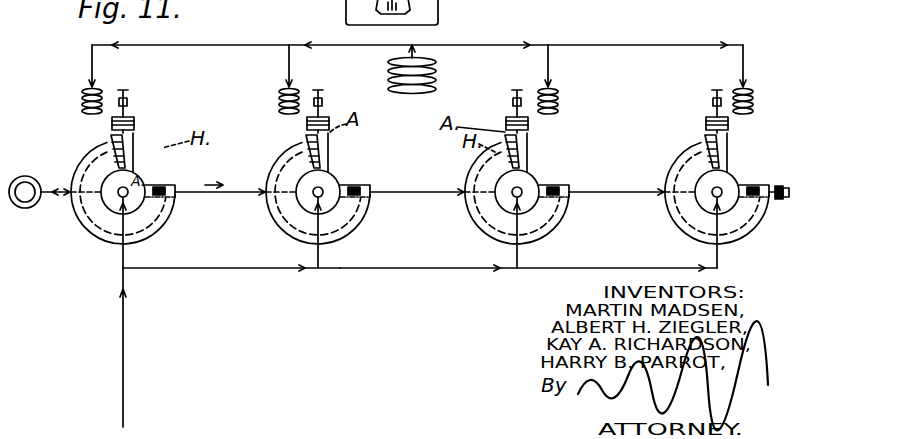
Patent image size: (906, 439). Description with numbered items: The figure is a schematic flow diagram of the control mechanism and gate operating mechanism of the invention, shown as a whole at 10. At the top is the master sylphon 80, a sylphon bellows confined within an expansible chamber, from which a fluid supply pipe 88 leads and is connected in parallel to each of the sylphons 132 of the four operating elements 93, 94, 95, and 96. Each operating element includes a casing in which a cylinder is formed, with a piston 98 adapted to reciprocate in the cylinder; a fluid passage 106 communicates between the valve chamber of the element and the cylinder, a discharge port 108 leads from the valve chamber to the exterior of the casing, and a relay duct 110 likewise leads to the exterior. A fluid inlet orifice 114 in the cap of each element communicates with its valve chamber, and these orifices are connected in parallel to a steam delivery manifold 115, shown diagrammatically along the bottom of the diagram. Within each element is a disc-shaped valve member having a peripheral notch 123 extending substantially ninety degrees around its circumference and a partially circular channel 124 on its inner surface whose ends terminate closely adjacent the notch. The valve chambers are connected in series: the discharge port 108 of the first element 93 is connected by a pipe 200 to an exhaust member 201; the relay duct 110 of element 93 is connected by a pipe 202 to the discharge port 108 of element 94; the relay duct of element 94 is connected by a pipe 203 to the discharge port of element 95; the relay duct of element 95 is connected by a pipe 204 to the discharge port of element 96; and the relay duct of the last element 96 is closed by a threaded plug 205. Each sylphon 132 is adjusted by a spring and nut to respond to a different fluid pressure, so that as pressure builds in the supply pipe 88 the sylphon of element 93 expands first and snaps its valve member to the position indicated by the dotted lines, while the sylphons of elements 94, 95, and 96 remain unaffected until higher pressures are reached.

The apparatus 10 is at (432, 227).
The master sylphon 80 is at (438, 81).
The supply pipe 88 is at (236, 48).
The gate operating element 93 is at (99, 277).
The operating element 94 is at (346, 274).
The operating element 95 is at (495, 280).
The operating element 96 is at (769, 230).
The piston 98 is at (131, 118).
The fluid passage 106 is at (131, 146).
The discharge port 108 is at (77, 212).
The relay duct 110 is at (160, 185).
The fluid inlet orifice 114 is at (120, 195).
The steam delivery manifold 115 is at (229, 270).
The peripheral notch 123 is at (138, 172).
The partially circular channel 124 is at (93, 156).
The sylphon bellows 132 is at (102, 94).
The pipe 200 is at (52, 186).
The exhaust member 201 is at (25, 175).
The pipe 202 is at (220, 194).
The pipe 203 is at (420, 194).
The pipe 204 is at (620, 194).
The threaded plug 205 is at (771, 201).